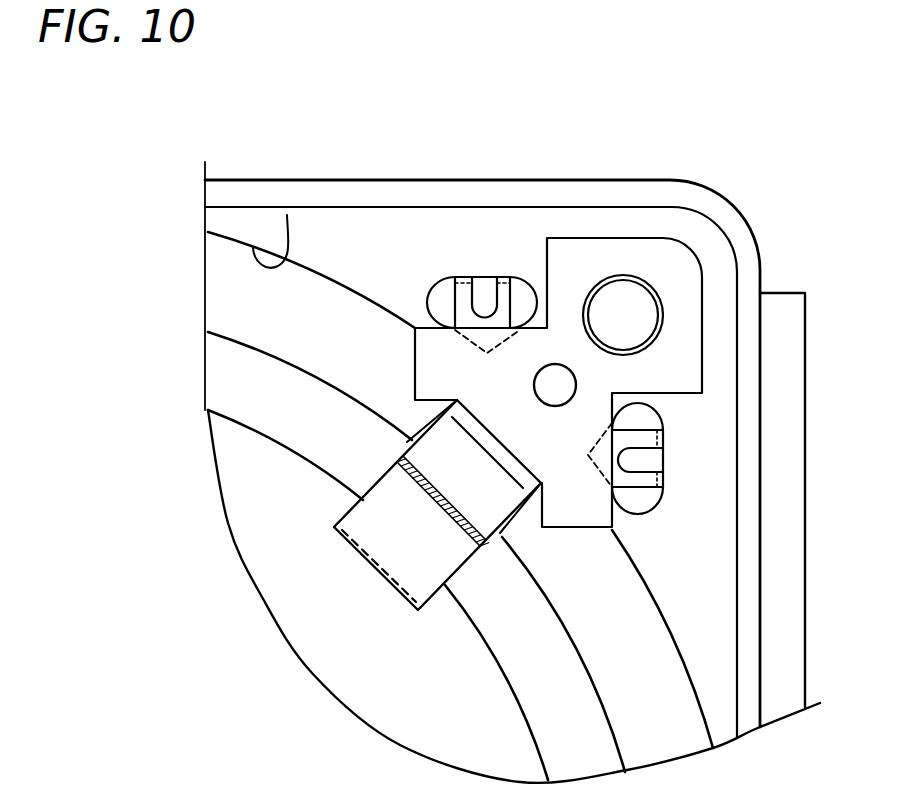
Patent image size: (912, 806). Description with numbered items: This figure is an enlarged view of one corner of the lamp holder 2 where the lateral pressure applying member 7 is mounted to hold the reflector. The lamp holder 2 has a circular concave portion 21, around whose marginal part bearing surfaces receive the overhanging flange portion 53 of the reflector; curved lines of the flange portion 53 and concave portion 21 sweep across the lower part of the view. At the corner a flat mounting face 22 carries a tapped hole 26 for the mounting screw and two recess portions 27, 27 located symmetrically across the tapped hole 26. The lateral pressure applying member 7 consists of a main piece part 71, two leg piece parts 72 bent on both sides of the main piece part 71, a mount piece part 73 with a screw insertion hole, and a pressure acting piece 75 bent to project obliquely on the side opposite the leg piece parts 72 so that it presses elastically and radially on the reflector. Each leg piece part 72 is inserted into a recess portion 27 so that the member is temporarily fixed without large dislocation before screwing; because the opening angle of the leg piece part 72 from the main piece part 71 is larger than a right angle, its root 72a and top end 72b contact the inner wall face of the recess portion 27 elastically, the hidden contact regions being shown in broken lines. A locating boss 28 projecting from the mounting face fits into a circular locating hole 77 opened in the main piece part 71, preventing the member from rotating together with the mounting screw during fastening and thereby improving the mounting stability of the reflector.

The lamp holder 2 is at (405, 178).
The lateral pressure applying member 7 is at (585, 238).
The circular concave portion 21 is at (287, 220).
The mounting face 22 is at (700, 240).
The tapped hole 26 is at (660, 303).
The recess portion 27 is at (428, 292).
The locating boss 28 is at (568, 382).
The flange portion 53 is at (278, 377).
The main piece part 71 is at (437, 410).
The leg piece part 72 is at (434, 291).
The root 72a is at (485, 337).
The top end 72b is at (463, 277).
The mount piece part 73 is at (650, 257).
The pressure acting piece 75 is at (378, 577).
The locating hole 77 is at (497, 463).